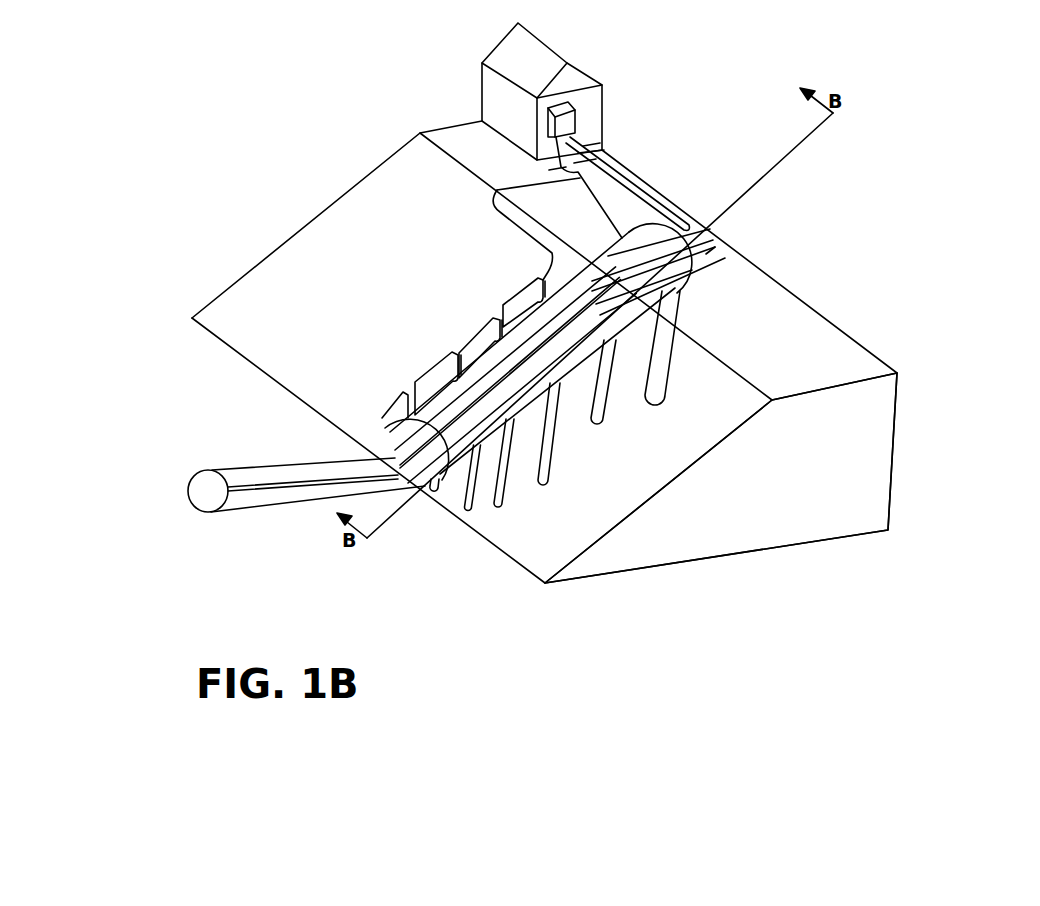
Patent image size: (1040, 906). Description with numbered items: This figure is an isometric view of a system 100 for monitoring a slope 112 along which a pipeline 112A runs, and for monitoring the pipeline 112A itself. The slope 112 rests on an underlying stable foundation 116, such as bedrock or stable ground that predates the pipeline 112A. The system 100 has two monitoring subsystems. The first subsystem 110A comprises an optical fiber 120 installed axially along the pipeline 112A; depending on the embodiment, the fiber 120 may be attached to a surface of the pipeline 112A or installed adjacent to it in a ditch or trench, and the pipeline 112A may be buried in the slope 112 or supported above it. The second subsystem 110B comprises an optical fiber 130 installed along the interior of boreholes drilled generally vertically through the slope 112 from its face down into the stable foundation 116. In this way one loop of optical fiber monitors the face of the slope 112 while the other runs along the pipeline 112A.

The system 100 is at (554, 303).
The slope 112 is at (262, 300).
The pipeline 112A is at (327, 467).
The stable foundation 116 is at (827, 503).
The optical fiber 120 is at (271, 452).
The first subsystem 110A is at (277, 481).
The optical fiber 130 is at (447, 286).
The second subsystem 110B is at (520, 227).